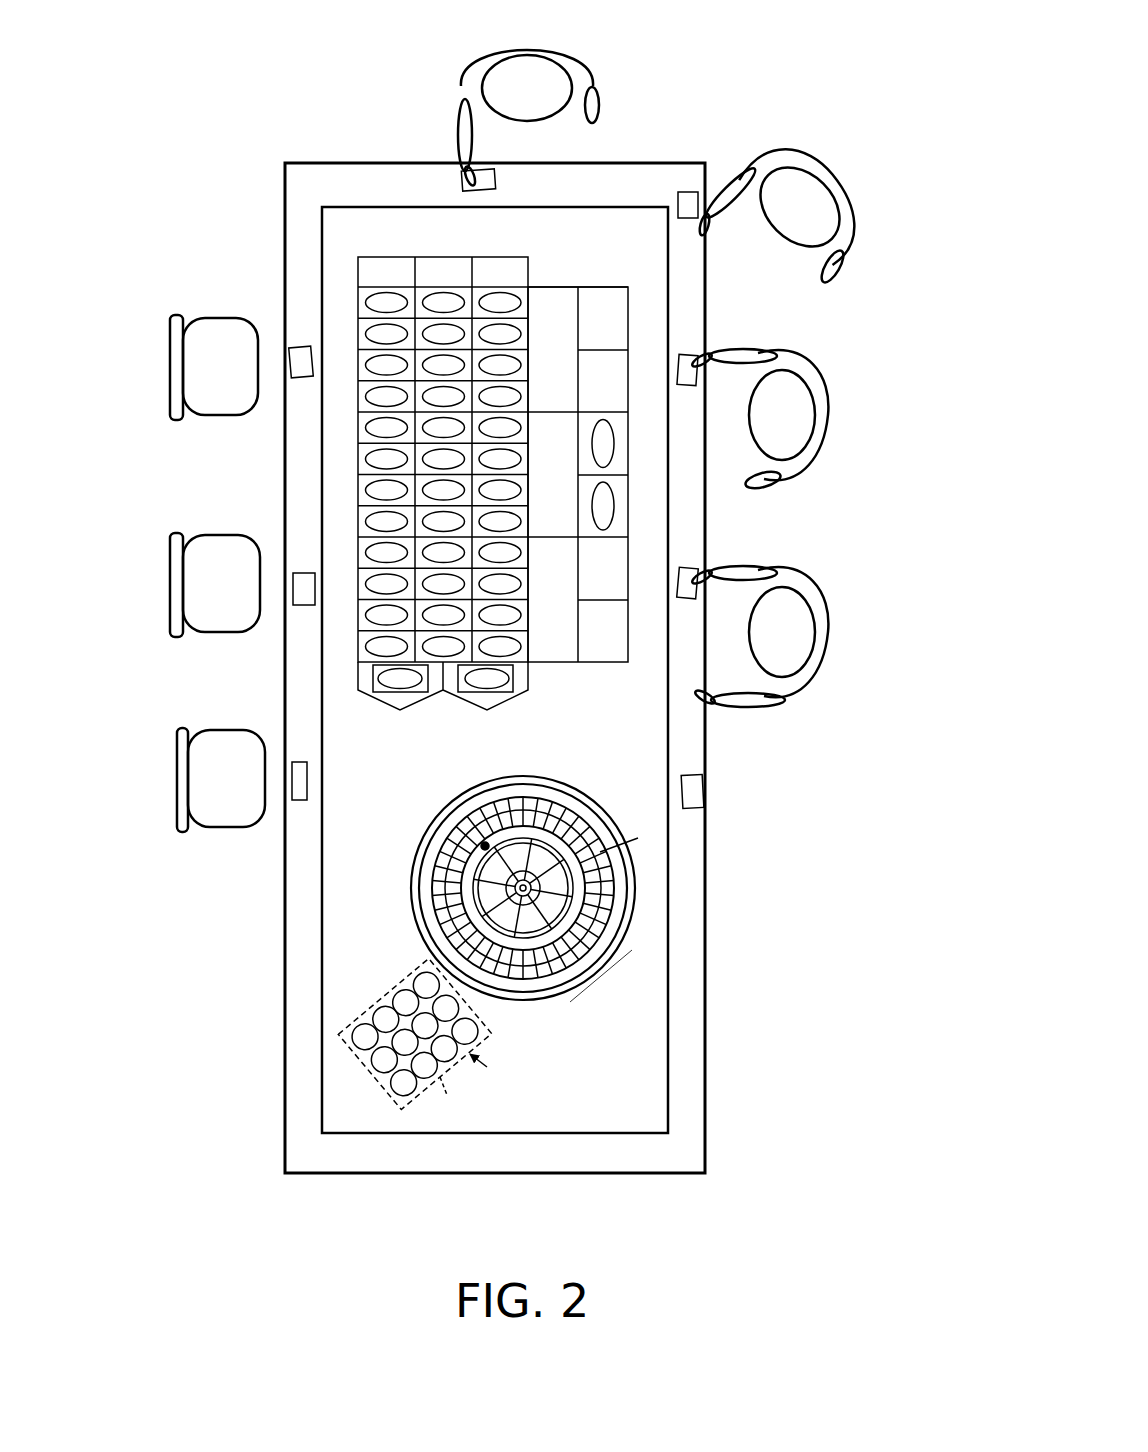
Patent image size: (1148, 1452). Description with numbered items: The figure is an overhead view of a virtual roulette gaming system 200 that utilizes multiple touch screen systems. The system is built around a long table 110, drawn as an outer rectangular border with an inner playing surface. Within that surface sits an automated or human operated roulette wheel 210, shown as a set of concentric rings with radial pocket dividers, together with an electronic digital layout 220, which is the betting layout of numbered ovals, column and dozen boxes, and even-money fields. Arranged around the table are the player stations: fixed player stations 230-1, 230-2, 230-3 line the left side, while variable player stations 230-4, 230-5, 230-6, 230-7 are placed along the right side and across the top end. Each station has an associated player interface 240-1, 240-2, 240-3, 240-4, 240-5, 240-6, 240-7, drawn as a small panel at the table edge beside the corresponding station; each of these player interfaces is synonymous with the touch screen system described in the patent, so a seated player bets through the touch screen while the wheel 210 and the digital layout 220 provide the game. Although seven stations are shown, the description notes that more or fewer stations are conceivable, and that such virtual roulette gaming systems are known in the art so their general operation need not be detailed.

The virtual roulette gaming system 200 is at (183, 77).
The roulette gaming table 110 is at (280, 158).
The electronic digital layout 220 is at (397, 248).
The roulette wheel 210 is at (613, 924).
The fixed player station 230-1 is at (152, 323).
The fixed player station 230-2 is at (152, 538).
The fixed player station 230-3 is at (158, 726).
The variable player station 230-4 is at (840, 584).
The variable player station 230-5 is at (846, 374).
The variable player station 230-6 is at (862, 183).
The variable player station 230-7 is at (600, 53).
The player interface 240-1 is at (293, 358).
The player interface 240-2 is at (295, 585).
The player interface 240-3 is at (294, 770).
The player interface 240-4 is at (690, 572).
The player interface 240-5 is at (692, 358).
The player interface 240-6 is at (691, 197).
The player interface 240-7 is at (470, 182).